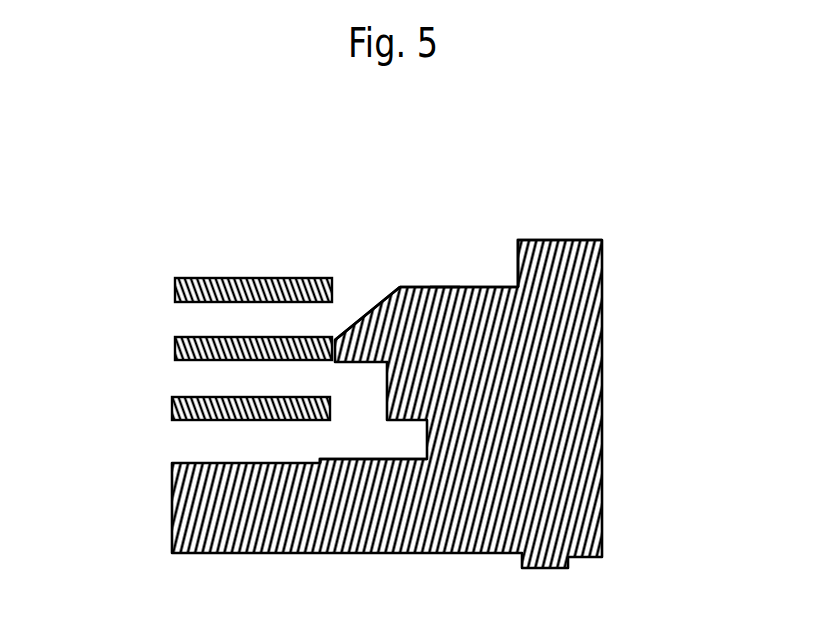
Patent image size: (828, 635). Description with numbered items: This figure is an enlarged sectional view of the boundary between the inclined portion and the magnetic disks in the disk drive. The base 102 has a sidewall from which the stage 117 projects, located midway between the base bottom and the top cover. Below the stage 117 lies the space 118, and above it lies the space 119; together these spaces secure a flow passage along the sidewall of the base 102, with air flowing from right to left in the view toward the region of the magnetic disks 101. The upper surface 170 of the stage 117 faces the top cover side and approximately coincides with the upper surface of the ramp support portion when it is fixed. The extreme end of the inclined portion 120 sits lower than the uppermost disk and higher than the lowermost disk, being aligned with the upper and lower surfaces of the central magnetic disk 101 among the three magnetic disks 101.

The magnetic disk 101 is at (175, 289).
The base 102 is at (580, 427).
The stage 117 is at (441, 297).
The space 118 is at (390, 459).
The space 119 is at (518, 250).
The inclined portion 120 is at (388, 295).
The upper surface of the stage 170 is at (426, 292).